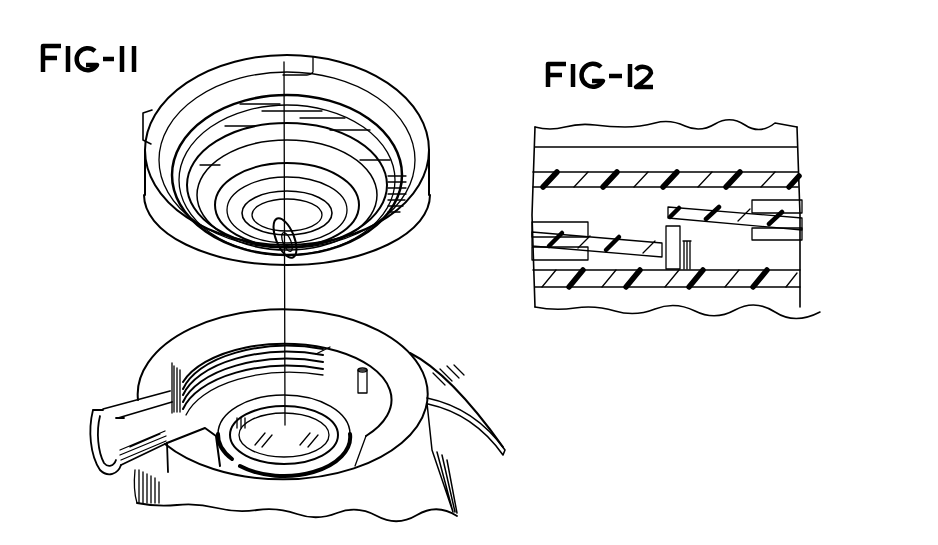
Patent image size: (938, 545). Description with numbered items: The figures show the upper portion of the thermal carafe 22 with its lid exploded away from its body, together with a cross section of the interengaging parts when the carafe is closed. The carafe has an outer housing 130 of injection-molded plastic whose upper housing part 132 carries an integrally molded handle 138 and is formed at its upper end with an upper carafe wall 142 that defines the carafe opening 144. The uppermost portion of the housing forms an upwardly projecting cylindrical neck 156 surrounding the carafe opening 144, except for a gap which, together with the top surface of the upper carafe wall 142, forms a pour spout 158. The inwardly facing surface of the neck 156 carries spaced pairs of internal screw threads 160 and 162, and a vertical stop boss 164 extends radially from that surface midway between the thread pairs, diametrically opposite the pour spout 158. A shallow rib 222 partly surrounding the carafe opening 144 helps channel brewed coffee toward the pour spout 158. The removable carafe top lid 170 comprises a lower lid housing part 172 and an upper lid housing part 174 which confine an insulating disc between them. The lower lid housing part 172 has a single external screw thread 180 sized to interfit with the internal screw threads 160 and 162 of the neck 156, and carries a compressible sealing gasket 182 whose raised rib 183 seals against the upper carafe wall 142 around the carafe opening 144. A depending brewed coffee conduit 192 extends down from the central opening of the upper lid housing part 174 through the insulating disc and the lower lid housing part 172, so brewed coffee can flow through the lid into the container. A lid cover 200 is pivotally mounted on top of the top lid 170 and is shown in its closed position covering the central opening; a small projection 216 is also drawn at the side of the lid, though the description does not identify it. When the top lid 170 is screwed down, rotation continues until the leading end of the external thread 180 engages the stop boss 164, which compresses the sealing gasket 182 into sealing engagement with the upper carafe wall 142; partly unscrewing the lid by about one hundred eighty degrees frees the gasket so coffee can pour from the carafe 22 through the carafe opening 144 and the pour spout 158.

In FIG. 11, the thermal carafe 22 is at (162, 316).
In FIG. 11, the outer housing 130 is at (120, 496).
In FIG. 11, the upper housing part 132 is at (428, 500).
In FIG. 11, the handle 138 is at (468, 410).
In FIG. 11, the upper carafe wall 142 is at (160, 358).
In FIG. 12, the upper carafe wall 142 is at (625, 282).
In FIG. 11, the carafe opening 144 is at (228, 462).
In FIG. 11, the neck 156 is at (424, 450).
In FIG. 11, the pour spout 158 is at (115, 423).
In FIG. 11, the internal screw threads 160 is at (339, 306).
In FIG. 12, the internal screw threads 160 is at (532, 252).
In FIG. 12, the internal screw threads 162 is at (802, 233).
In FIG. 11, the stop boss 164 is at (363, 390).
In FIG. 12, the stop boss 164 is at (690, 240).
In FIG. 11, the carafe top lid 170 is at (138, 197).
In FIG. 12, the carafe top lid 170 is at (809, 181).
In FIG. 11, the lower lid housing part 172 is at (397, 220).
In FIG. 11, the upper lid housing part 174 is at (383, 95).
In FIG. 11, the external screw thread 180 is at (370, 150).
In FIG. 12, the external screw thread 180 is at (641, 241).
In FIG. 11, the sealing gasket 182 is at (197, 230).
In FIG. 11, the raised rib 183 is at (212, 238).
In FIG. 11, the brewed coffee conduit 192 is at (263, 250).
In FIG. 11, the lid cover 200 is at (220, 67).
In FIG. 11, the tab 216 is at (145, 128).
In FIG. 11, the shallow rib 222 is at (330, 400).